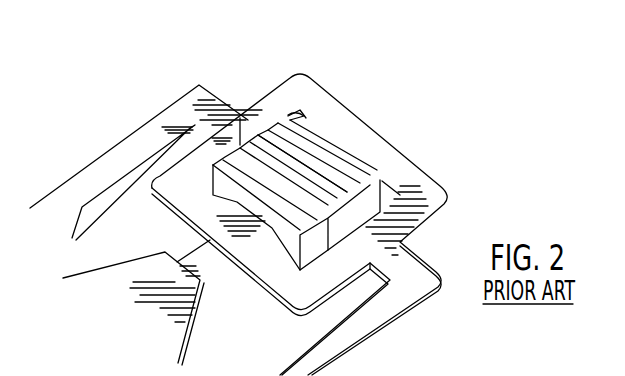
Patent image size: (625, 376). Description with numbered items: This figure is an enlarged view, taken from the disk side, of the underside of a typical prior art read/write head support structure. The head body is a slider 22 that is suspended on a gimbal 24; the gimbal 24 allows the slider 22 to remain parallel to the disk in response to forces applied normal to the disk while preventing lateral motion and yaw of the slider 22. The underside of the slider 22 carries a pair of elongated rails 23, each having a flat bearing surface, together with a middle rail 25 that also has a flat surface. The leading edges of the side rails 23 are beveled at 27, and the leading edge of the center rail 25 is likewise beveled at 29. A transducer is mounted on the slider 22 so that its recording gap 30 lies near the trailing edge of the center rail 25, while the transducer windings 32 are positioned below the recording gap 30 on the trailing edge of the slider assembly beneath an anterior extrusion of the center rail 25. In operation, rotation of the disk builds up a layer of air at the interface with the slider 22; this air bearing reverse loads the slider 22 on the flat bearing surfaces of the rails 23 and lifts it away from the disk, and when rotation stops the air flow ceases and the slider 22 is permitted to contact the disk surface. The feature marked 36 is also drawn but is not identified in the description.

The connector housing 22 is at (358, 138).
The contact terminals 23 is at (308, 128).
The mounting plate 24 is at (423, 178).
The contact 25 is at (312, 178).
The lead strip 27 is at (218, 163).
The lead 29 is at (240, 117).
The plate surface 30 is at (382, 181).
The solder area 32 is at (412, 233).
The carrier strip 36 is at (262, 80).